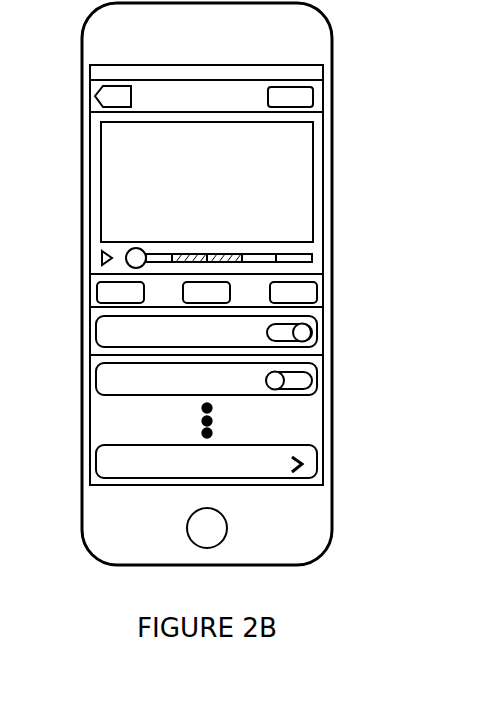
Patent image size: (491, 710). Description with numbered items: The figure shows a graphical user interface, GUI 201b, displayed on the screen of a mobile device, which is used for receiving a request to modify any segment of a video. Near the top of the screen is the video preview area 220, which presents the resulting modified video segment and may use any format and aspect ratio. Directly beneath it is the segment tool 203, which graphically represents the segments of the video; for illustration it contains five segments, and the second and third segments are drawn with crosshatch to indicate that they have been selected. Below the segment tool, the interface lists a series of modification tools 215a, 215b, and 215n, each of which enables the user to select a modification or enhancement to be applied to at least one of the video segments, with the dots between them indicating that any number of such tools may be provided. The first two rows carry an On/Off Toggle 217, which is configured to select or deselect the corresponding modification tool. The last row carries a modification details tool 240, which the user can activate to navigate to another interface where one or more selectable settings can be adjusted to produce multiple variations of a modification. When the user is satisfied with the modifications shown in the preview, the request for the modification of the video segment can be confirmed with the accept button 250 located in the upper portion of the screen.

The GUI 201b is at (83, 137).
The accept button 250 is at (313, 96).
The video preview area 220 is at (192, 206).
The segment tool 203 is at (312, 257).
The On/Off Toggle 217 is at (250, 355).
The modification details tool 240 is at (250, 473).
The modification tool 215a is at (206, 331).
The modification tool 215b is at (206, 379).
The modification tool 215n is at (206, 461).